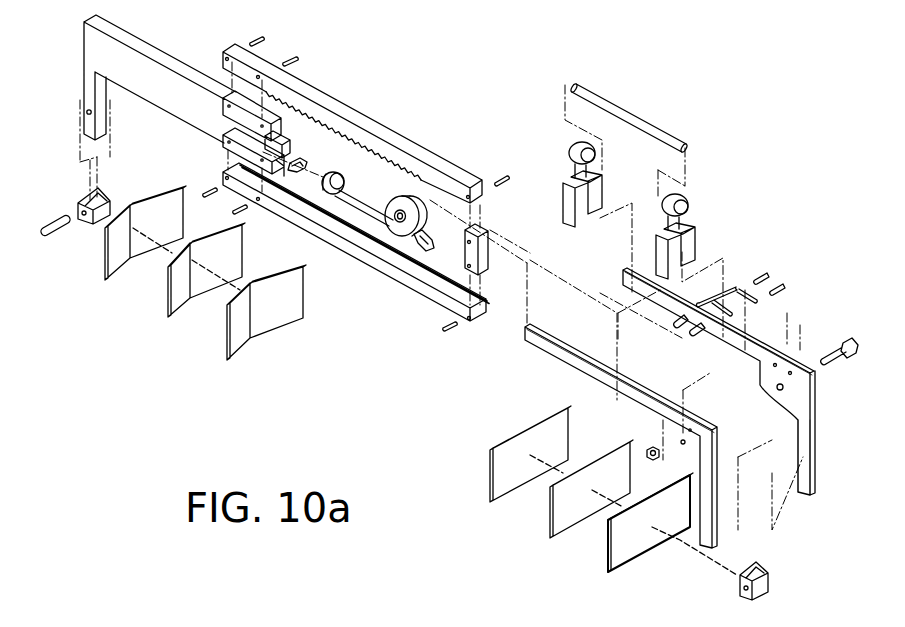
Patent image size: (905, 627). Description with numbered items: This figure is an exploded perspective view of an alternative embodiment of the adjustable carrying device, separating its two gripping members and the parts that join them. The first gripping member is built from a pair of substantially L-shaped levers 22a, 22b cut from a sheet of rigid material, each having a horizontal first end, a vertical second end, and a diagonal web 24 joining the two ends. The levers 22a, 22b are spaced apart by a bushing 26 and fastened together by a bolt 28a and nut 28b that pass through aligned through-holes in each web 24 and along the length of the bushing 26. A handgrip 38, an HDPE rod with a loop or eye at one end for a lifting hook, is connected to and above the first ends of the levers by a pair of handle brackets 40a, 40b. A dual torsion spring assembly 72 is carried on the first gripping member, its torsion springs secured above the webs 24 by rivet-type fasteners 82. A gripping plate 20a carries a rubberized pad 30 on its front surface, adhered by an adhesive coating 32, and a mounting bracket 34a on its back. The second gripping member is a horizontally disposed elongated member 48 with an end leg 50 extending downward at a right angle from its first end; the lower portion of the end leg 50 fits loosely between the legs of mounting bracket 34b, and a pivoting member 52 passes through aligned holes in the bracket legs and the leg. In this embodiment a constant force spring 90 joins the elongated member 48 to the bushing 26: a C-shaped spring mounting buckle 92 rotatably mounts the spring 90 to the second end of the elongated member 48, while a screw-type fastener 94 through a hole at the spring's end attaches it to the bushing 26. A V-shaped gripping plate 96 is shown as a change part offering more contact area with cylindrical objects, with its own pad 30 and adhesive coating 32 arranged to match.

The elongated member 48 is at (84, 37).
The end leg 50 is at (84, 108).
The mounting bracket 34b is at (80, 203).
The pivoting member 52 is at (46, 238).
The "V"-shaped gripping plate 96 is at (110, 282).
The adhesive coating 32 is at (552, 540).
The rubberized pad 30 is at (495, 505).
The spring mounting buckle 92 is at (291, 172).
The constant force spring 90 is at (345, 182).
The bushing 26 is at (393, 226).
The screw-type fastener 94 is at (430, 249).
The handle bracket 40a is at (573, 148).
The handgrip 38 is at (636, 114).
The handle bracket 40b is at (690, 200).
The dual torsion spring assembly 72 is at (759, 274).
The rivet-type fastener 82 is at (784, 291).
The L-shaped lever 22a is at (547, 348).
The nut 28b is at (650, 450).
The bolt 28a is at (843, 358).
The web 24 is at (786, 404).
The L-shaped lever 22b is at (815, 460).
The gripping plate 20a is at (612, 572).
The mounting bracket 34a is at (770, 590).